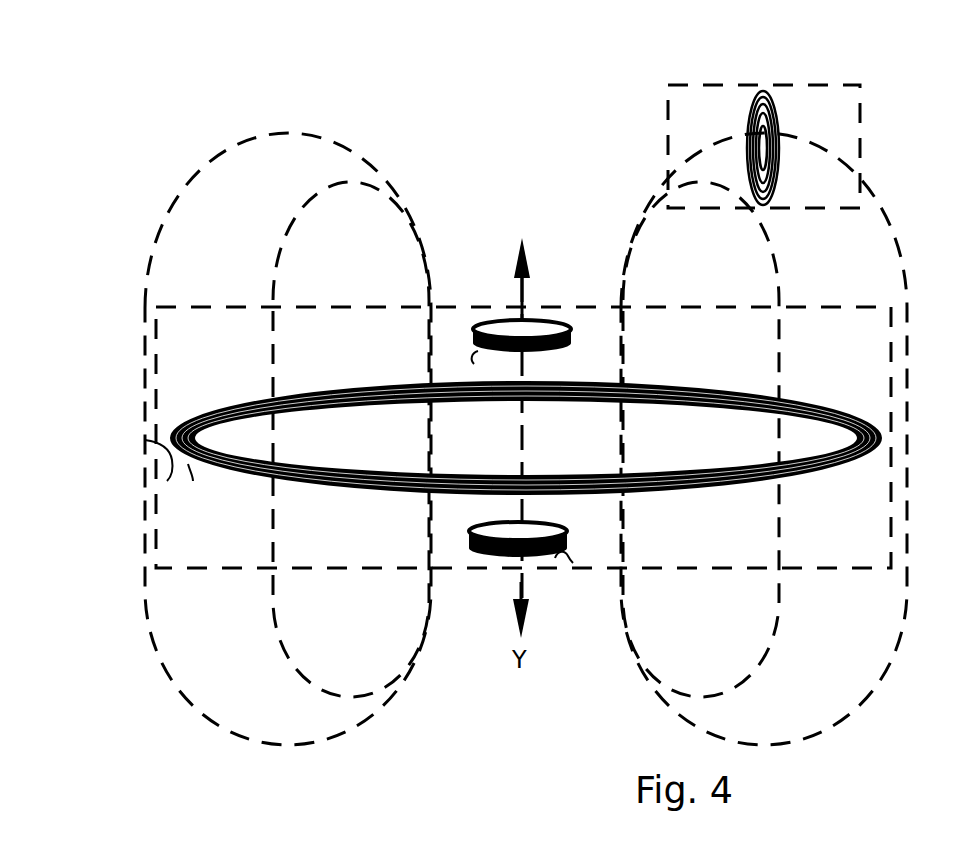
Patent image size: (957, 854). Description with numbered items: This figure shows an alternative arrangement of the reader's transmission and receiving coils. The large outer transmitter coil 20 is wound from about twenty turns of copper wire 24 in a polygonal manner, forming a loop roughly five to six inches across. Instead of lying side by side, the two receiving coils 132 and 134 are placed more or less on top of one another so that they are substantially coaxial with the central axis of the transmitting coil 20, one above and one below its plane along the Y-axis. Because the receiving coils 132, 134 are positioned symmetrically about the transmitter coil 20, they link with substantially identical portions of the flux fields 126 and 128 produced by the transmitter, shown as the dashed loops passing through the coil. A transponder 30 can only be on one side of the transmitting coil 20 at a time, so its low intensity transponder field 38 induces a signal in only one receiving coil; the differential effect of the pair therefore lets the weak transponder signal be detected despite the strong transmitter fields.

The transmitter coil 20 is at (203, 413).
The copper wire 24 is at (145, 440).
The transponder 30 is at (770, 148).
The transponder field 38 is at (748, 116).
The flux field 126 is at (428, 276).
The flux field 128 is at (623, 273).
The receiving coil 132 is at (543, 320).
The receiving coil 134 is at (545, 558).